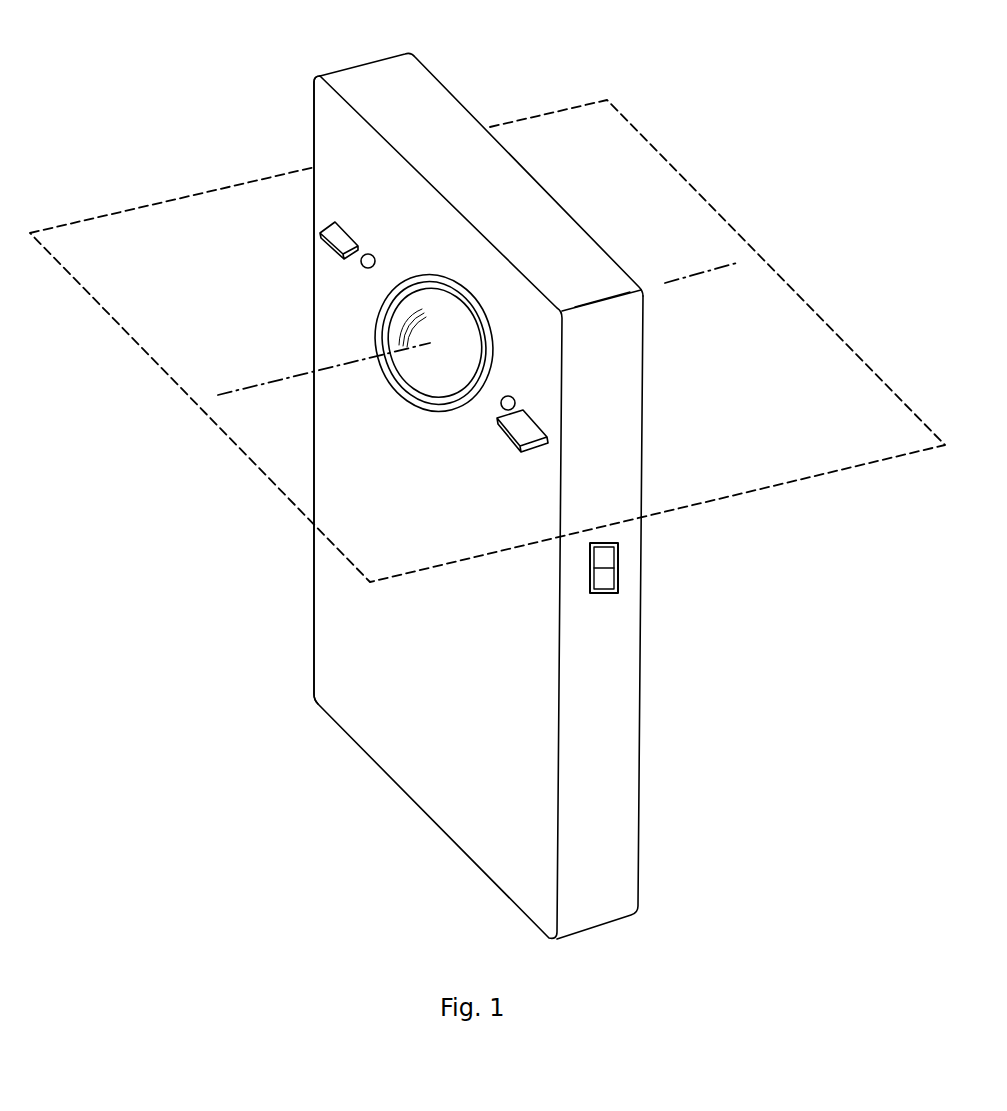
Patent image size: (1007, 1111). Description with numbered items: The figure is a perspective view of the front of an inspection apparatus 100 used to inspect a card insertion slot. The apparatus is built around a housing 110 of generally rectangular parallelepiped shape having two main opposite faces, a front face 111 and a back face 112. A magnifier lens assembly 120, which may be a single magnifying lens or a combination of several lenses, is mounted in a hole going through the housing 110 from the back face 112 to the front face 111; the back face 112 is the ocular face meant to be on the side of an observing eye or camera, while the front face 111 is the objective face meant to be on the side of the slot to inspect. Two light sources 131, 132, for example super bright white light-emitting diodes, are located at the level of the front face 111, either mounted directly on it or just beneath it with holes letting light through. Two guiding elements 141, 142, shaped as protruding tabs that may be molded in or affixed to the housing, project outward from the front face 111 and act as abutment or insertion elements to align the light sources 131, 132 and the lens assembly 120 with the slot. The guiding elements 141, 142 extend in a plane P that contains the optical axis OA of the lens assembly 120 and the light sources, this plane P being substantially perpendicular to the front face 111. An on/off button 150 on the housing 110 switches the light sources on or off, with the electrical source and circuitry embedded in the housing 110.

The inspection apparatus 100 is at (363, 62).
The housing 110 is at (387, 752).
The front face 111 is at (335, 658).
The back face 112 is at (640, 772).
The magnifier lens assembly 120 is at (443, 312).
The light source 131 is at (361, 260).
The light source 132 is at (516, 403).
The guiding element 141 is at (320, 233).
The guiding element 142 is at (530, 423).
The on/off button 150 is at (605, 577).
The plane P is at (118, 315).
The optical axis OA is at (230, 390).